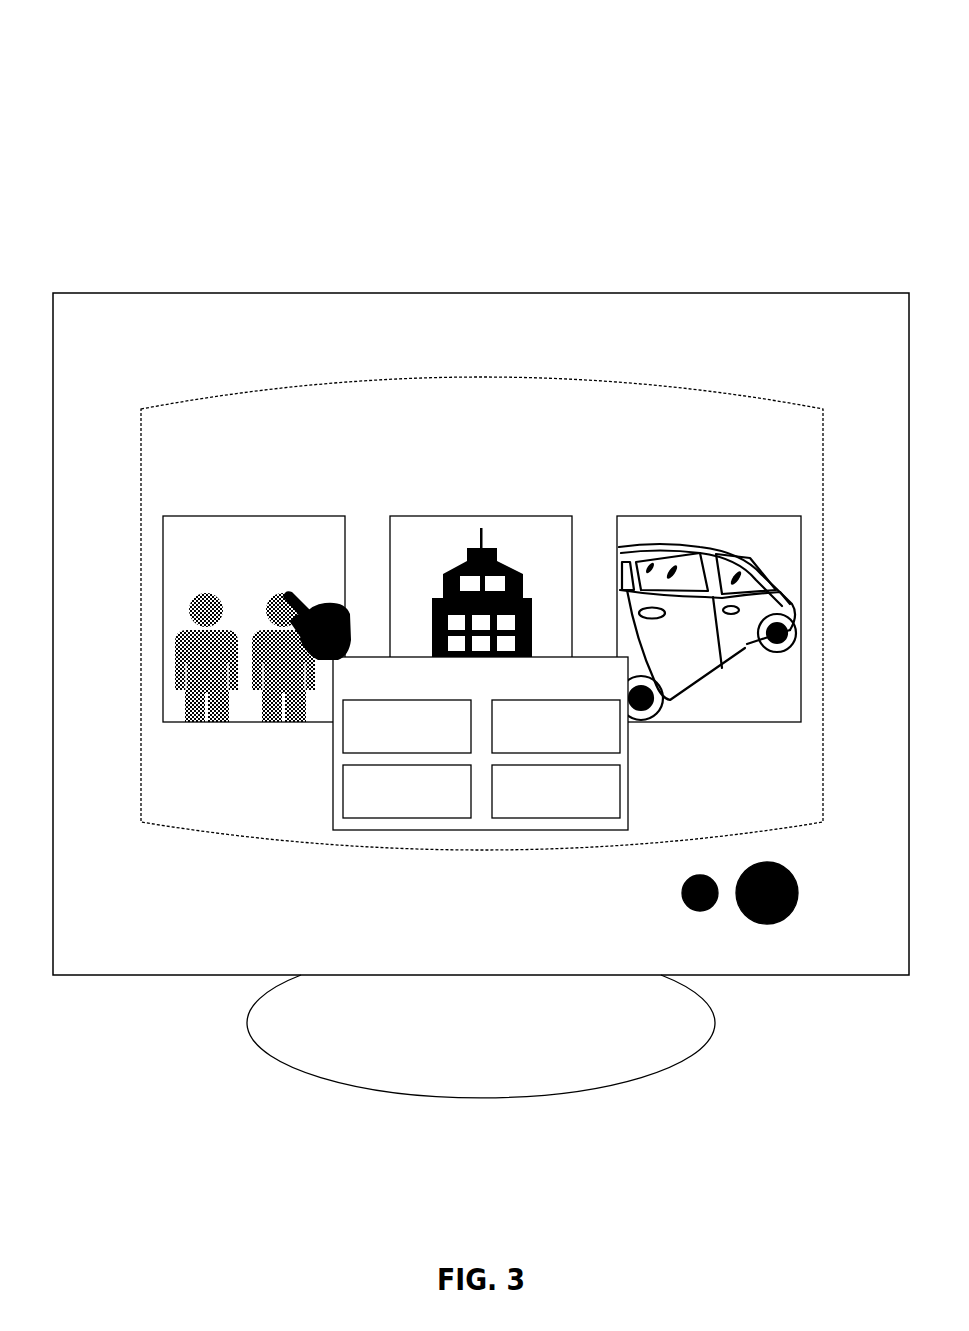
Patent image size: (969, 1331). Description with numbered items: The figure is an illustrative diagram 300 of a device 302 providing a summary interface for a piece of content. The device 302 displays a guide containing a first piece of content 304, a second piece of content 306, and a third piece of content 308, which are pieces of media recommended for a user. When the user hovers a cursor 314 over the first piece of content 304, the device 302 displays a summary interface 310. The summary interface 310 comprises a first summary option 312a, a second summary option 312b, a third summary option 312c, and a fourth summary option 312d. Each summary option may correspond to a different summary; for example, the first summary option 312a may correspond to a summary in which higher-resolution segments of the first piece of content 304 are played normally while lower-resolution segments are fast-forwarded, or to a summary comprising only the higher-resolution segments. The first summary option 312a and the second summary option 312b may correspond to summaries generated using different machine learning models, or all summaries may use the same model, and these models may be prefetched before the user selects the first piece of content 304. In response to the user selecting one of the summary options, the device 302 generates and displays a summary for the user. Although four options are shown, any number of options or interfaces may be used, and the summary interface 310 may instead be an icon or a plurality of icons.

The user interface display 300 is at (462, 40).
The device 302 is at (292, 293).
The first piece of content 304 is at (252, 516).
The second piece of content 306 is at (482, 516).
The third piece of content 308 is at (712, 516).
The summary interface 310 is at (630, 828).
The first summary option 312a is at (343, 745).
The second summary option 312b is at (620, 745).
The third summary option 312c is at (343, 792).
The fourth summary option 312d is at (620, 792).
The cursor 314 is at (348, 621).